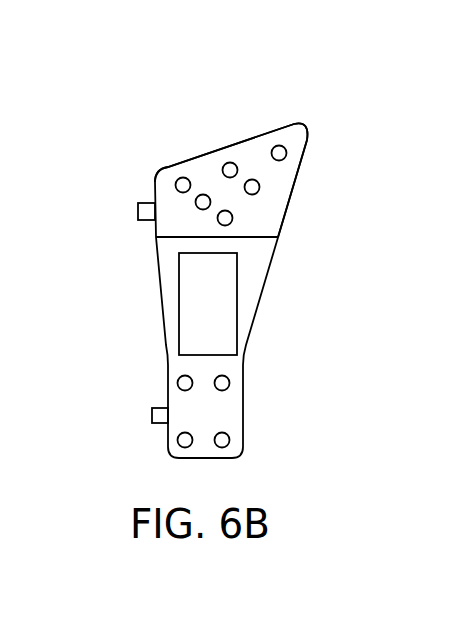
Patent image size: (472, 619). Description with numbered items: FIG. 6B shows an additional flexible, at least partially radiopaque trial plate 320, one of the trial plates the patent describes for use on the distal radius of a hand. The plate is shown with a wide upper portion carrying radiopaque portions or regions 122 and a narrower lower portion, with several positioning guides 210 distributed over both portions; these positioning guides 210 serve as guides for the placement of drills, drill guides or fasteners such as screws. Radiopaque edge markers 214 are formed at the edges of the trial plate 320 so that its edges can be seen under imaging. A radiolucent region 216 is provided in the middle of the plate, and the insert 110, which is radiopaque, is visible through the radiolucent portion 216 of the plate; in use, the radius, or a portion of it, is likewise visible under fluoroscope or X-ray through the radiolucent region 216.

The flexible at least partially radiopaque trial plate 320 is at (252, 50).
The insert 110 is at (262, 339).
The radiopaque portion 122 is at (295, 182).
The positioning guide 210 is at (185, 178).
The radiopaque edge marker 214 is at (138, 210).
The radiolucent region 216 is at (237, 275).